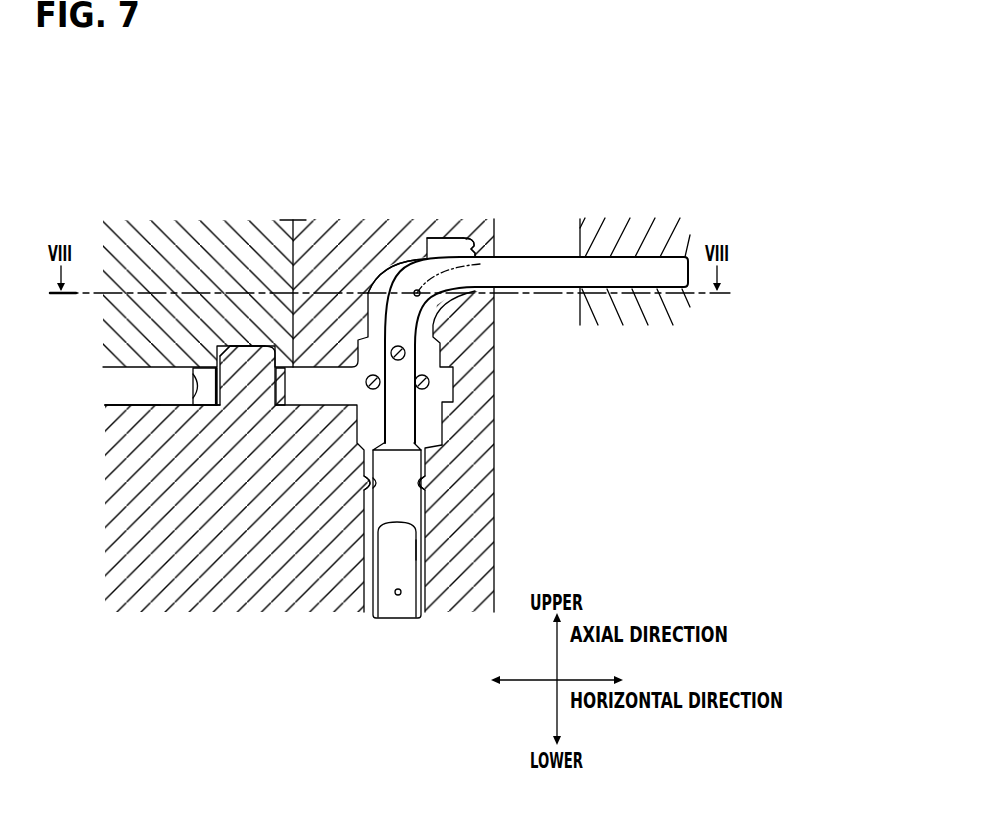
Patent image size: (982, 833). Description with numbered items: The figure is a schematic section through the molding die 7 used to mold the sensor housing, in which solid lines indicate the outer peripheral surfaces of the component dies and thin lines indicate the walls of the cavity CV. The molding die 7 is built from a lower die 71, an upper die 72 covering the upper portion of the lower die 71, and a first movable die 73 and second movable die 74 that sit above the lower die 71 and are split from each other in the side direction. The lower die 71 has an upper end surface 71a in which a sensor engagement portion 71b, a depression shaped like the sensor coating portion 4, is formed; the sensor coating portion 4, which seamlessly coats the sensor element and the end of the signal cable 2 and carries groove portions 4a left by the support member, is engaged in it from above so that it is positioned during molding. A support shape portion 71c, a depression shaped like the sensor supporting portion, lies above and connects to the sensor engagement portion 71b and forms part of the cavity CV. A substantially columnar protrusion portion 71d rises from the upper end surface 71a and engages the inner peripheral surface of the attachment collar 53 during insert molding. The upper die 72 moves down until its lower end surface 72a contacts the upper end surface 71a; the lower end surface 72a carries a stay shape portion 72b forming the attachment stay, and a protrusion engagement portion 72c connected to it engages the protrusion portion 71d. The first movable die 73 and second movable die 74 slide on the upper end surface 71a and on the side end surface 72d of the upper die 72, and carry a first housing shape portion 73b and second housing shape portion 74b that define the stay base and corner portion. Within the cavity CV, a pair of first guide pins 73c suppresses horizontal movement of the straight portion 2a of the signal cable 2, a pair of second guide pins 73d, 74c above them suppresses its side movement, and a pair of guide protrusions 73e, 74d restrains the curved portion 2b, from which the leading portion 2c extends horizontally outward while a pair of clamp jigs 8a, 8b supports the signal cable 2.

The molding die 7 is at (331, 370).
The upper die 72 is at (128, 225).
The lower end surface 72a is at (143, 406).
The stay shape portion 72b is at (193, 375).
The protrusion engagement portion 72c is at (262, 342).
The side end surface 72d is at (293, 221).
The first movable die 73 is at (393, 387).
The second movable die 74 is at (363, 220).
The first housing shape portion 73b is at (423, 210).
The second housing shape portion 74b is at (388, 278).
The first guide pins 73c is at (406, 353).
The second guide pin 73d is at (523, 451).
The second guide pin 74c is at (435, 352).
The guide protrusion 73e is at (500, 205).
The guide protrusion 74d is at (478, 250).
The lower die 71 is at (118, 597).
The upper end surface 71a is at (113, 399).
The sensor engagement portion 71b is at (411, 548).
The support shape portion 71c is at (430, 490).
The protrusion portion 71d is at (207, 340).
The signal cable 2 is at (555, 257).
The straight portion 2a is at (420, 423).
The curved portion 2b is at (440, 238).
The leading portion 2c is at (513, 290).
The sensor coating portion 4 is at (425, 510).
The groove portions 4a is at (377, 593).
The clamp jig 8a is at (647, 222).
The clamp jig 8b is at (678, 313).
The attachment collar 53 is at (200, 426).
The cavity CV is at (430, 480).